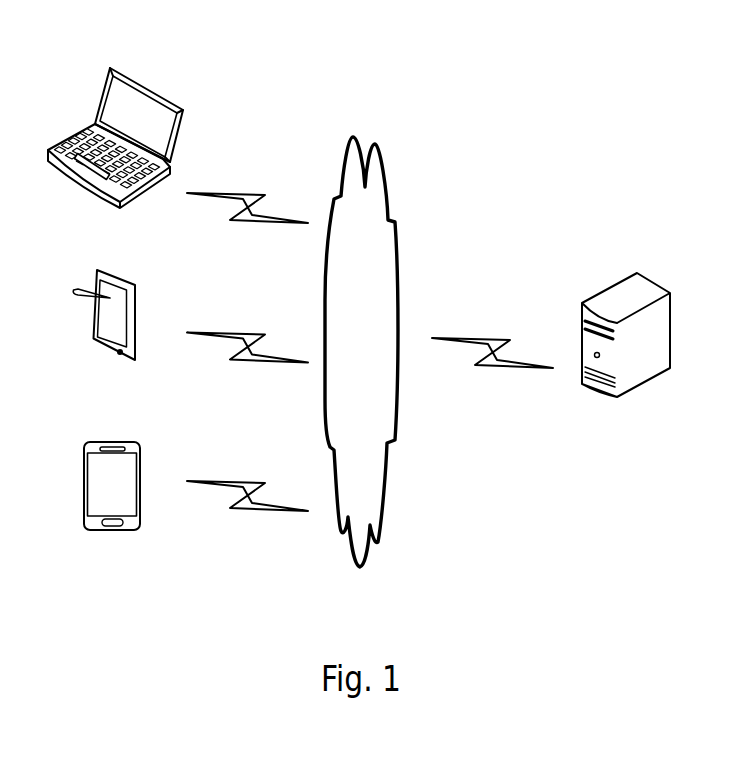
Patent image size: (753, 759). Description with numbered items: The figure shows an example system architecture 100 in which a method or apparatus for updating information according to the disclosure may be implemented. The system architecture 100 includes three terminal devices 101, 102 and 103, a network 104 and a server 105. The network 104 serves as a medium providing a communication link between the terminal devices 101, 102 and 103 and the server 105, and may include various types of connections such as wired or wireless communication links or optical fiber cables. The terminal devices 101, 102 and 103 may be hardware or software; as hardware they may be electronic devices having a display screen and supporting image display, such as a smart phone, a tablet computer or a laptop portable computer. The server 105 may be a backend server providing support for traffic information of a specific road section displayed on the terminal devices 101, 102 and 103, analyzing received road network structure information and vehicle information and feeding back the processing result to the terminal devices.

The system architecture 100 is at (578, 60).
The terminal device 101 is at (115, 151).
The terminal device 102 is at (104, 332).
The terminal device 103 is at (112, 504).
The network 104 is at (361, 352).
The server 105 is at (626, 352).